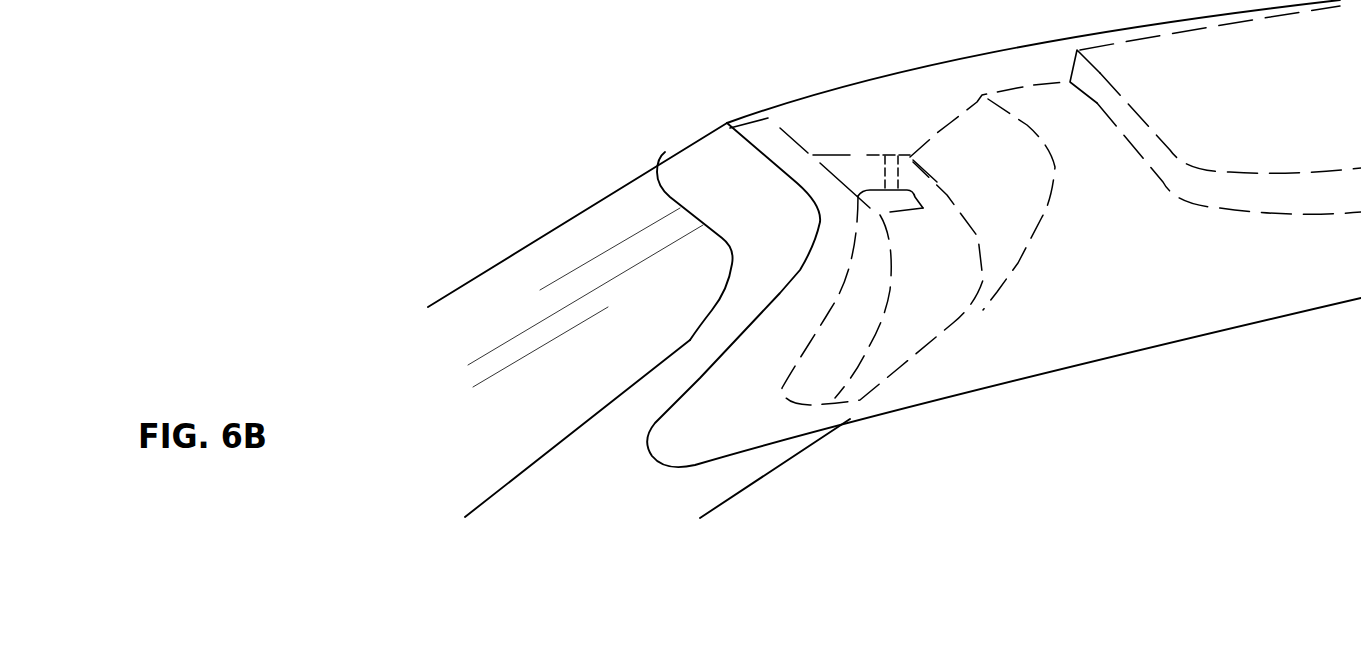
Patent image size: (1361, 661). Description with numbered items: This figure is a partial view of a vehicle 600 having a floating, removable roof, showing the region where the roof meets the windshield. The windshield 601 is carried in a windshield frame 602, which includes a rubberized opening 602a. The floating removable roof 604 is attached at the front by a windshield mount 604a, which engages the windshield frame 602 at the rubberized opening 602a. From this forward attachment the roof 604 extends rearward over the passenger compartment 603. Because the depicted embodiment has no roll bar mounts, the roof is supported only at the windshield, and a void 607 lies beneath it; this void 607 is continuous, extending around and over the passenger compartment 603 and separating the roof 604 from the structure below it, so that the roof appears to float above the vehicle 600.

The vehicle 600 is at (432, 188).
The windshield 601 is at (582, 210).
The windshield frame 602 is at (688, 145).
The rubberized opening 602a is at (913, 200).
The passenger compartment 603 is at (963, 512).
The floating removable roof 604 is at (952, 62).
The windshield mount 604a is at (883, 155).
The void 607 is at (1163, 448).